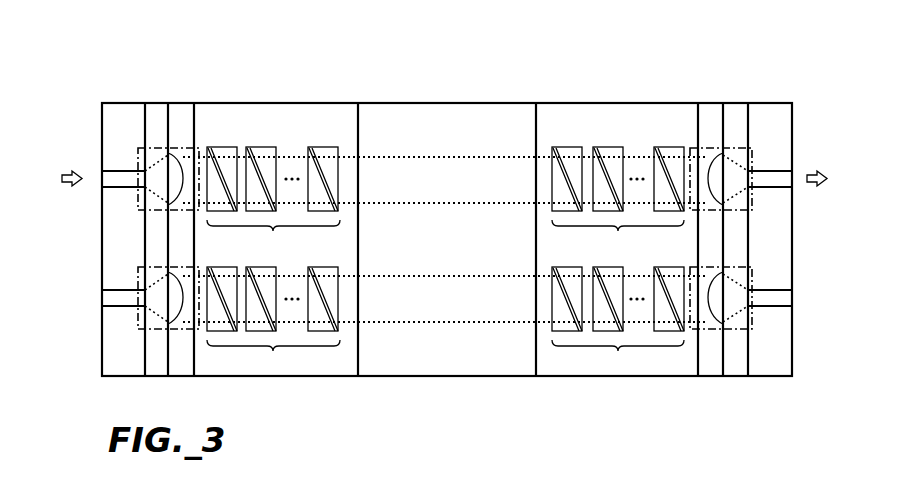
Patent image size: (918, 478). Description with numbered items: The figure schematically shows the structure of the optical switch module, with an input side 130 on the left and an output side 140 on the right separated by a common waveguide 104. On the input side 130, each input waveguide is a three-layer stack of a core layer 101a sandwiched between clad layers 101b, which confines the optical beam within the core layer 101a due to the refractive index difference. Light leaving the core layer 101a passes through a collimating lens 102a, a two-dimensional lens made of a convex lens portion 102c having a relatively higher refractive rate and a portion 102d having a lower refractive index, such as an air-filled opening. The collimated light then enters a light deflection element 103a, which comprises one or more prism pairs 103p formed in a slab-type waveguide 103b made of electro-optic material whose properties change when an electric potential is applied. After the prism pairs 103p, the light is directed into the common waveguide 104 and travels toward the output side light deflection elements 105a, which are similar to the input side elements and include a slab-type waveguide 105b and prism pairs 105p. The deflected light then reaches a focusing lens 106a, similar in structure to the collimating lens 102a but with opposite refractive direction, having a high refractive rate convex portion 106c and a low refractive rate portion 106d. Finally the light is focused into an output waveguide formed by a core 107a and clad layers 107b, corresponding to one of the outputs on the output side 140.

The input side 130 is at (160, 205).
The output side 140 is at (655, 205).
The core layer 101a is at (120, 190).
The clad layer 101b is at (112, 160).
The collimating lens 102a is at (136, 150).
The convex lens portion 102c is at (158, 112).
The lower refractive index portion 102d is at (182, 112).
The light deflection element 103a is at (273, 221).
The slab-type waveguide 103b is at (308, 240).
The prism pair 103p is at (312, 147).
The common waveguide 104 is at (417, 103).
The light deflection element 105a is at (603, 225).
The slab-type waveguide 105b is at (598, 245).
The prism pair 105p is at (660, 147).
The focusing lens 106a is at (696, 145).
The convex lens portion 106c is at (733, 112).
The low refractive rate portion 106d is at (712, 112).
The core 107a is at (770, 165).
The clad layer 107b is at (785, 160).